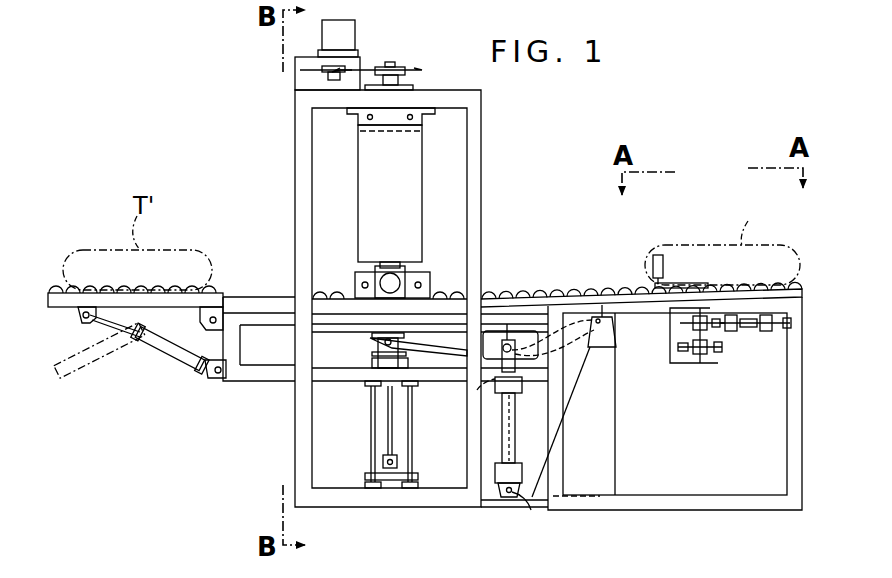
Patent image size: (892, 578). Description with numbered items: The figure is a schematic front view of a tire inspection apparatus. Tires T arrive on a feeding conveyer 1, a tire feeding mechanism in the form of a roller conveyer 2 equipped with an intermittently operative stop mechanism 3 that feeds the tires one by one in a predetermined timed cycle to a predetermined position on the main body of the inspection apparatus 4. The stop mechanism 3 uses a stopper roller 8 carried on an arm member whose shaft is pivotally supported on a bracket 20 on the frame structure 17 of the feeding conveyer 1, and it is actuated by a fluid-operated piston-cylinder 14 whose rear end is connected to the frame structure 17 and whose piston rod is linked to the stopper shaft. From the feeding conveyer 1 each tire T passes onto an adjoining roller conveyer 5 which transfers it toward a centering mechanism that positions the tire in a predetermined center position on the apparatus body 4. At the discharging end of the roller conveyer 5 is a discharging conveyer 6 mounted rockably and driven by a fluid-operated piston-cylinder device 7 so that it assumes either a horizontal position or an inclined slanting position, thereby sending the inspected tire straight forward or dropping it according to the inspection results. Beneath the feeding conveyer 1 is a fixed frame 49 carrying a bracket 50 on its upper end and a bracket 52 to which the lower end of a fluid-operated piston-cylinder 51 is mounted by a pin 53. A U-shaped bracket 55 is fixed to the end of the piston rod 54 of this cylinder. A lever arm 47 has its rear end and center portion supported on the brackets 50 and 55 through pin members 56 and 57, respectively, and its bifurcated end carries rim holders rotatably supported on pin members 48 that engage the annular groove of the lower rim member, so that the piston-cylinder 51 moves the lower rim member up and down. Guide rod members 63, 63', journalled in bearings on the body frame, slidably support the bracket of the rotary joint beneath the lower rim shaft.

The feeding conveyer 1 is at (657, 242).
The roller conveyer 2 is at (611, 291).
The stop mechanism 3 is at (668, 275).
The inspection apparatus main body 4 is at (483, 185).
The roller conveyer 5 is at (490, 292).
The discharging conveyer 6 is at (178, 290).
The fluid-operated piston-cylinder device 7 is at (173, 362).
The stopper roller 8 is at (653, 259).
The fluid-operated piston-cylinder 14 is at (746, 331).
The frame structure 17 is at (790, 446).
The bracket 20 is at (685, 364).
The lever arm 47 is at (442, 346).
The pin member 48 is at (376, 346).
The fixed frame 49 is at (607, 453).
The bracket 50 is at (614, 340).
The fluid-operated piston-cylinder 51 is at (516, 440).
The bracket 52 is at (517, 494).
The pin 53 is at (509, 498).
The piston rod 54 is at (498, 381).
The U-shaped bracket 55 is at (520, 345).
The pin member 56 is at (604, 323).
The pin member 57 is at (506, 340).
The guide rod member 63 is at (367, 434).
The guide rod member 63' is at (430, 434).